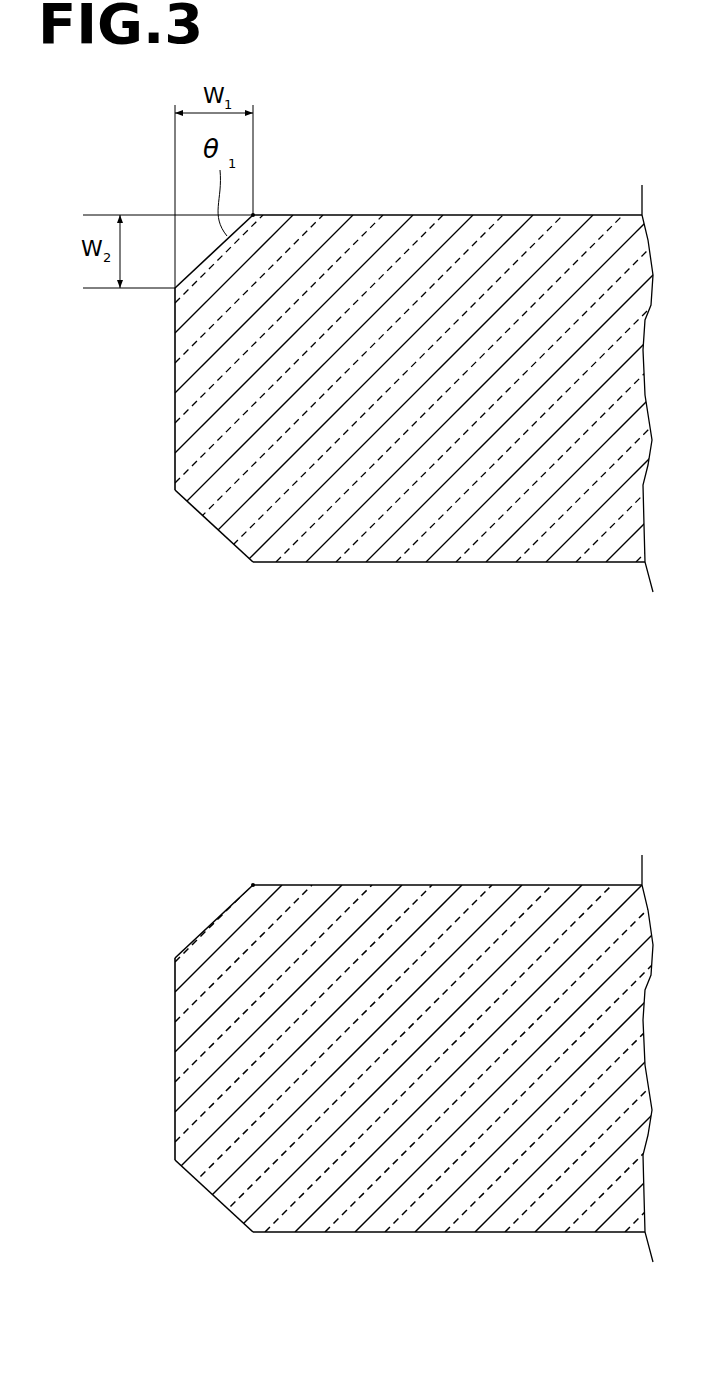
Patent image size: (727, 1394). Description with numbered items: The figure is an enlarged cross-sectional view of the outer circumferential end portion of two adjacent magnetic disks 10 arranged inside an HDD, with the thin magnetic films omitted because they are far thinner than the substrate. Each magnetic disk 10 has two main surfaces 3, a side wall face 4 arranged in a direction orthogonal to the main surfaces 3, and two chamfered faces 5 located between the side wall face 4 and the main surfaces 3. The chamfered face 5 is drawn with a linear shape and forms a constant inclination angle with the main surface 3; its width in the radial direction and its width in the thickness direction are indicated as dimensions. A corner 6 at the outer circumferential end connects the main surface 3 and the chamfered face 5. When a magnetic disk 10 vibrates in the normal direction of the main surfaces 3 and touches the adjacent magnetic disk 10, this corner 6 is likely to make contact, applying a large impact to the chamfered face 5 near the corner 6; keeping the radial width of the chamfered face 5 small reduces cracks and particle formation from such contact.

The main surface 3 is at (423, 215).
The side wall face 4 is at (175, 352).
The chamfered face 5 is at (193, 268).
The corner 6 is at (253, 215).
The magnetic disk 10 is at (375, 710).